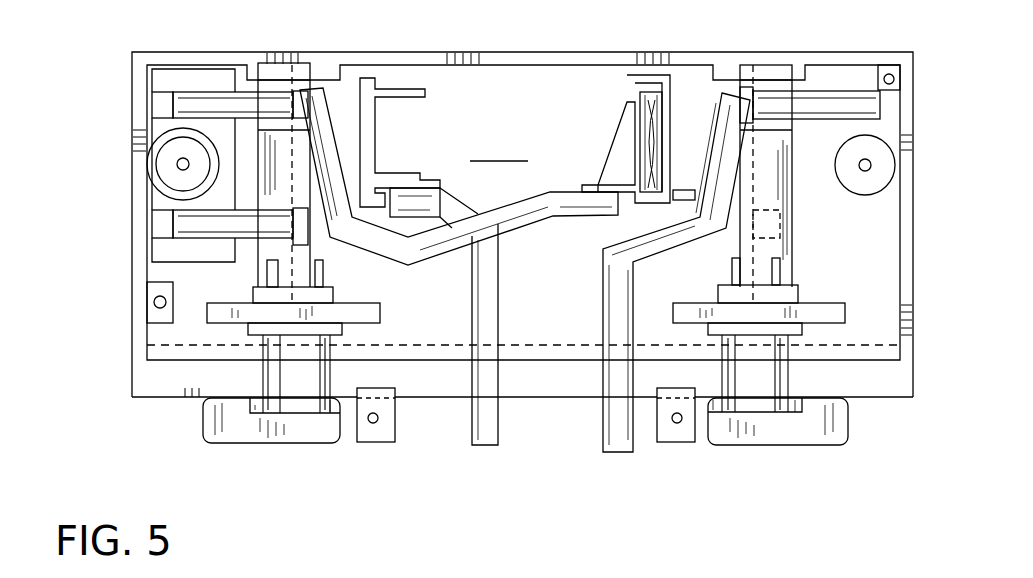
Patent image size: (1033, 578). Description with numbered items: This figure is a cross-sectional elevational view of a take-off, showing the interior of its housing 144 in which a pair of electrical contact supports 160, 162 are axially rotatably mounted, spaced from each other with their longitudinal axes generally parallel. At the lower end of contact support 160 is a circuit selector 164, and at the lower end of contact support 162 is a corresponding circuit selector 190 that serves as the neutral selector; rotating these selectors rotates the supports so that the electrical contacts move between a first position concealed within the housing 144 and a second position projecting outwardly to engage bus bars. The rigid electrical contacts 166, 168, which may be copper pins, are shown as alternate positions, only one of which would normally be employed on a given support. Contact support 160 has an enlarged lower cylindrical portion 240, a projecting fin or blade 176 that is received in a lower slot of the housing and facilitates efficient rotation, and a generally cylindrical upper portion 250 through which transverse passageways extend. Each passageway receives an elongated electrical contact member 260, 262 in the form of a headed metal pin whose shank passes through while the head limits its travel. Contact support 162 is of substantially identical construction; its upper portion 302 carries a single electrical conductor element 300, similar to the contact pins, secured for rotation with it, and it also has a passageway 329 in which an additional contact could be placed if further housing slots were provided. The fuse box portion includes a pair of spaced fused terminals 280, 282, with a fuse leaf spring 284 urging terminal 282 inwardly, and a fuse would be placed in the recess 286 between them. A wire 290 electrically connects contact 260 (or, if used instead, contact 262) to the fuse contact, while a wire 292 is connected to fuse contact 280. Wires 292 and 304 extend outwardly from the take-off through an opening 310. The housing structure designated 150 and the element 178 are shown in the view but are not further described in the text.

The housing 144 is at (126, 339).
The housing 150 is at (132, 86).
The electrical contact support 160 is at (331, 376).
The electrical contact support 162 is at (790, 376).
The circuit selector 164 is at (245, 443).
The electrical contact 166 is at (173, 107).
The electrical contact 168 is at (152, 224).
The projecting fin 176 is at (382, 305).
The flange plate 178 is at (822, 303).
The circuit selector 190 is at (808, 445).
The enlarged lower cylindrical portion 240 is at (263, 373).
The upper portion 250 is at (258, 172).
The electrical contact member 260 is at (200, 97).
The electrical contact member 262 is at (200, 233).
The fused terminal 280 is at (380, 132).
The fused terminal 282 is at (640, 120).
The fuse leaf spring 284 is at (650, 145).
The recess 286 is at (500, 146).
The wire 290 is at (526, 230).
The wire 292 is at (472, 438).
The electrical conductor element 300 is at (850, 93).
The upper portion 302 is at (797, 187).
The wire 304 is at (627, 453).
The opening 310 is at (528, 398).
The passageway 329 is at (792, 229).